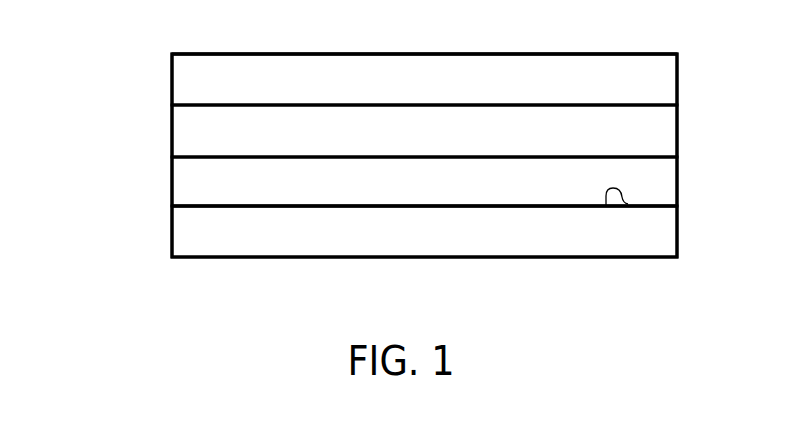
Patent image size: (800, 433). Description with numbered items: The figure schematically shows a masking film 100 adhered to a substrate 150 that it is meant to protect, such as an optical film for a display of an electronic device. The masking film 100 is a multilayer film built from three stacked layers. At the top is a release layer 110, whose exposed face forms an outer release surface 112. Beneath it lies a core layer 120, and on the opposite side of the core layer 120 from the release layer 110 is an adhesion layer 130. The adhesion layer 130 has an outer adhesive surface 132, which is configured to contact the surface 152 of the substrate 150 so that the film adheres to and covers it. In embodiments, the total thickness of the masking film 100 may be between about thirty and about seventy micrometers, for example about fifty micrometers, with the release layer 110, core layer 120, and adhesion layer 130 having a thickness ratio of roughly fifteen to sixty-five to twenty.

The masking film 100 is at (687, 55).
The release layer 110 is at (172, 82).
The outer release surface 112 is at (240, 53).
The core layer 120 is at (172, 132).
The adhesion layer 130 is at (172, 182).
The outer adhesive surface 132 is at (652, 207).
The substrate 150 is at (172, 234).
The surface 152 is at (606, 207).